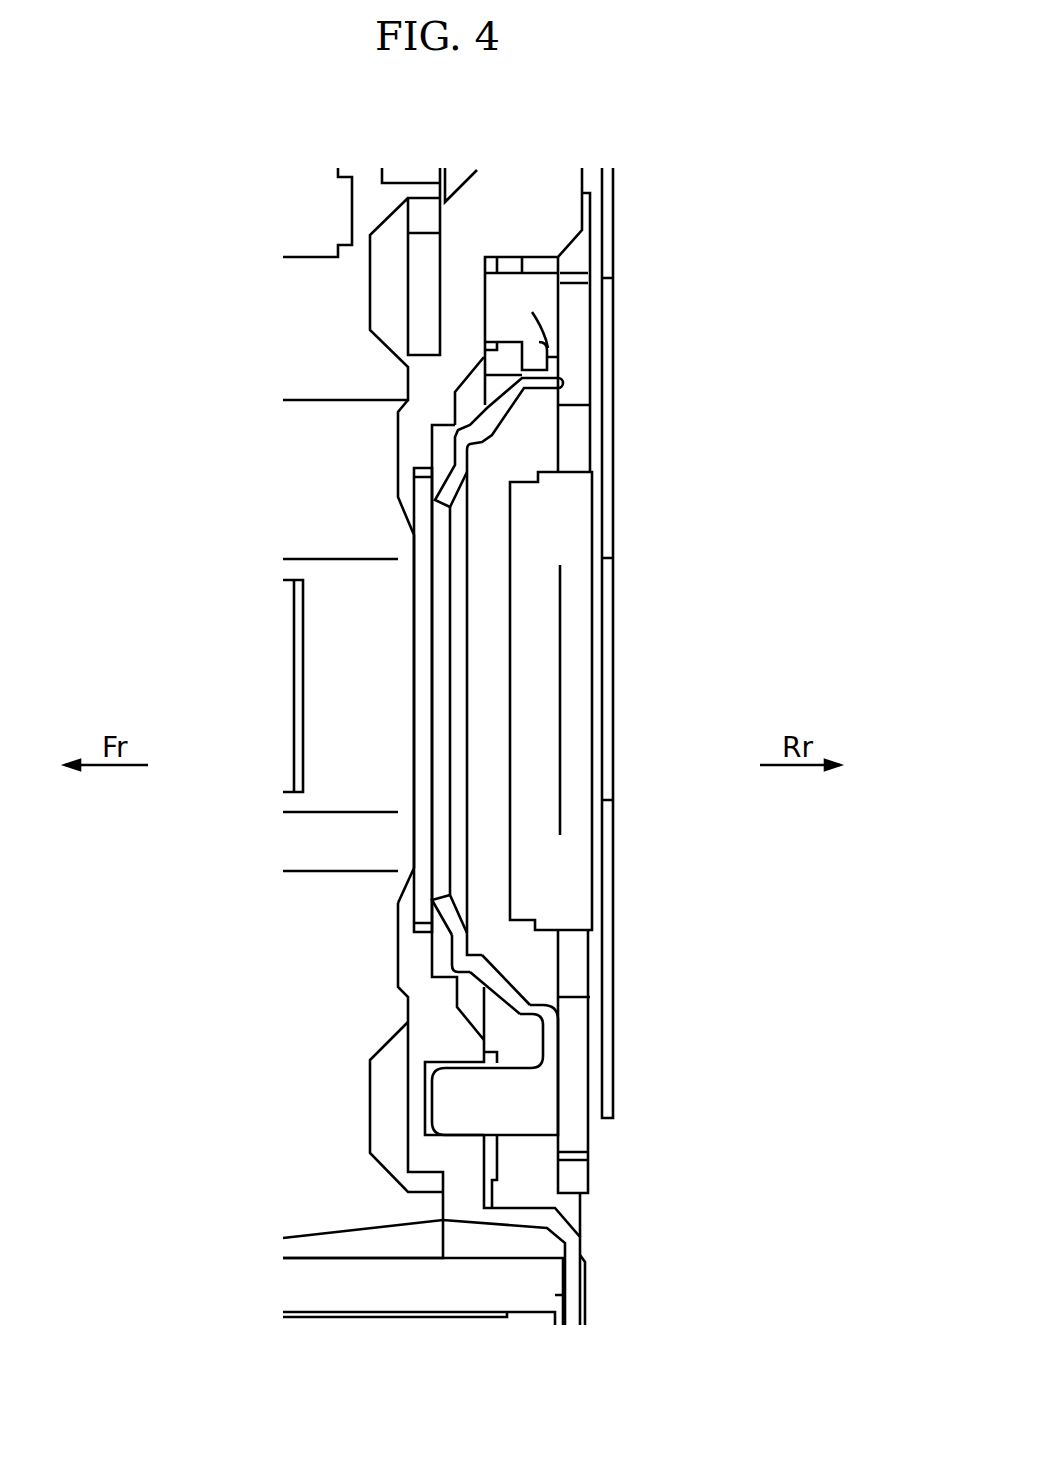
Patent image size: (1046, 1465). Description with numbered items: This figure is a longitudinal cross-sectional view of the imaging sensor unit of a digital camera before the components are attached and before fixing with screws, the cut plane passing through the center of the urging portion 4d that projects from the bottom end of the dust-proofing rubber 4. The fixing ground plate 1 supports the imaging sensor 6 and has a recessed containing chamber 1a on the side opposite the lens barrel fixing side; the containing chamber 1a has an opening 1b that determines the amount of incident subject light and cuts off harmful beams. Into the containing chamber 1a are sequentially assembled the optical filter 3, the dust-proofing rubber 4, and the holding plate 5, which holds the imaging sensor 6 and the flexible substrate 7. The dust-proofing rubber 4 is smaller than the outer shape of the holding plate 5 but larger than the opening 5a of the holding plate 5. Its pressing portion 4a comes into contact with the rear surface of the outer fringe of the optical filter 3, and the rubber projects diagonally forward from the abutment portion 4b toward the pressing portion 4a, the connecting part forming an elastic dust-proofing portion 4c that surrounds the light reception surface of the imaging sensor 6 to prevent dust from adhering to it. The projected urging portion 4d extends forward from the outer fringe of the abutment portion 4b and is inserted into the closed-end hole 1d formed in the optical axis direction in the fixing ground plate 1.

The fixing ground plate 1 is at (403, 437).
The containing chamber 1a is at (463, 400).
The opening 1b is at (405, 868).
The closed-end hole 1d is at (443, 1105).
The optical filter 3 is at (423, 688).
The dust-proofing rubber 4 is at (440, 558).
The pressing portion 4a is at (443, 903).
The abutment portion 4b is at (550, 1043).
The dust-proofing portion 4c is at (490, 988).
The urging portion 4d is at (527, 1098).
The holding plate 5 is at (583, 326).
The opening of the holding plate 5a is at (577, 407).
The imaging sensor 6 is at (565, 648).
The flexible substrate 7 is at (615, 233).